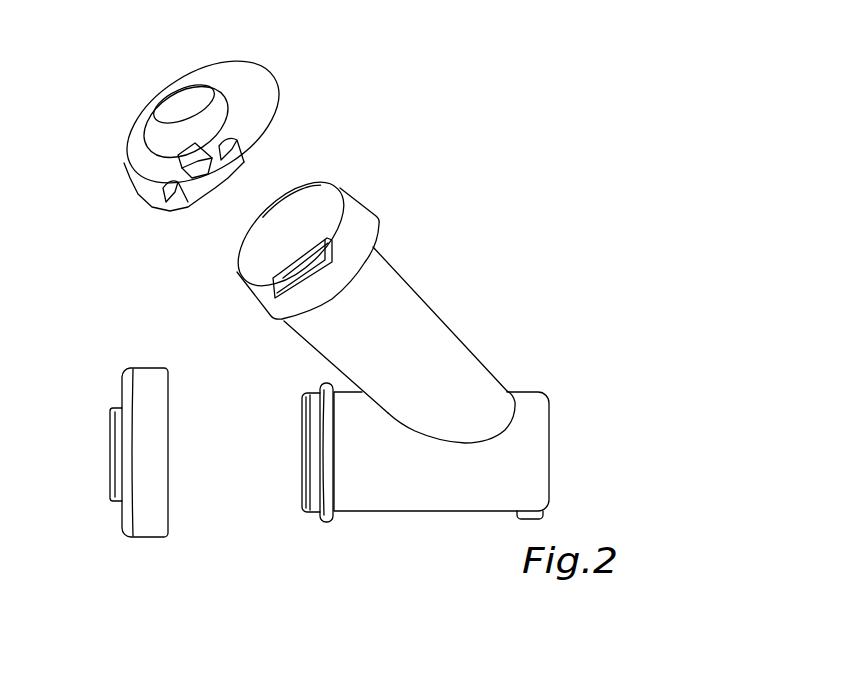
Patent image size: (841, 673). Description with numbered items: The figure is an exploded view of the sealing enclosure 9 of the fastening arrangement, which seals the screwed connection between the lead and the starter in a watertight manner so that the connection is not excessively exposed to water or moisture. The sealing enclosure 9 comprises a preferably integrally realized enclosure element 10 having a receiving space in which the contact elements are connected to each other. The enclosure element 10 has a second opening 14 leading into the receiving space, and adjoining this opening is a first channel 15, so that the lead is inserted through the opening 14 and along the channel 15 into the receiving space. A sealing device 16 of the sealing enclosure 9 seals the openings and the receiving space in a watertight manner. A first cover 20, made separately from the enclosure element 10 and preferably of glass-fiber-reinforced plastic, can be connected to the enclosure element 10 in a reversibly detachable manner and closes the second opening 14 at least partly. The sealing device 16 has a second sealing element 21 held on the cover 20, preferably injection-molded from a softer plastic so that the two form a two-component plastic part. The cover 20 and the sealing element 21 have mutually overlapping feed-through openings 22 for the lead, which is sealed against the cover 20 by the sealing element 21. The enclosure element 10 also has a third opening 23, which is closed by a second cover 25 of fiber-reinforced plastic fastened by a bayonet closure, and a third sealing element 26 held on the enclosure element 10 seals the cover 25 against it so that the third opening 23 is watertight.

The sealing enclosure 9 is at (412, 275).
The enclosure element 10 is at (466, 350).
The second opening 14 is at (330, 191).
The first channel 15 is at (270, 252).
The sealing device 16 is at (570, 481).
The first cover 20 is at (255, 85).
The second sealing element 21 is at (178, 100).
The feed-through openings 22 is at (150, 109).
The third opening 23 is at (291, 460).
The second cover 25 is at (152, 410).
The third sealing element 26 is at (313, 492).